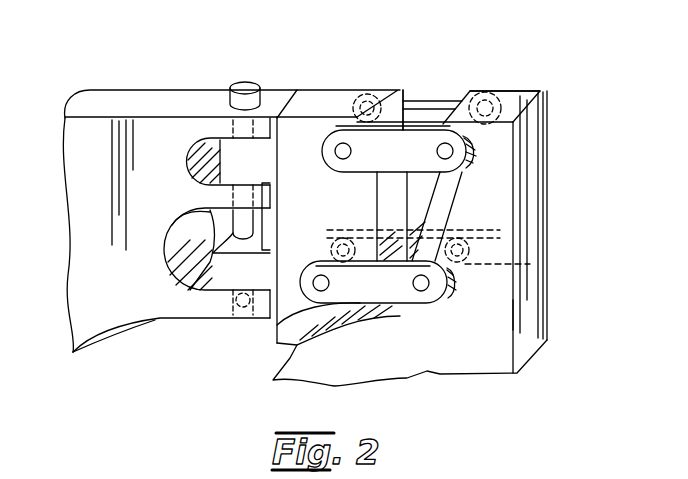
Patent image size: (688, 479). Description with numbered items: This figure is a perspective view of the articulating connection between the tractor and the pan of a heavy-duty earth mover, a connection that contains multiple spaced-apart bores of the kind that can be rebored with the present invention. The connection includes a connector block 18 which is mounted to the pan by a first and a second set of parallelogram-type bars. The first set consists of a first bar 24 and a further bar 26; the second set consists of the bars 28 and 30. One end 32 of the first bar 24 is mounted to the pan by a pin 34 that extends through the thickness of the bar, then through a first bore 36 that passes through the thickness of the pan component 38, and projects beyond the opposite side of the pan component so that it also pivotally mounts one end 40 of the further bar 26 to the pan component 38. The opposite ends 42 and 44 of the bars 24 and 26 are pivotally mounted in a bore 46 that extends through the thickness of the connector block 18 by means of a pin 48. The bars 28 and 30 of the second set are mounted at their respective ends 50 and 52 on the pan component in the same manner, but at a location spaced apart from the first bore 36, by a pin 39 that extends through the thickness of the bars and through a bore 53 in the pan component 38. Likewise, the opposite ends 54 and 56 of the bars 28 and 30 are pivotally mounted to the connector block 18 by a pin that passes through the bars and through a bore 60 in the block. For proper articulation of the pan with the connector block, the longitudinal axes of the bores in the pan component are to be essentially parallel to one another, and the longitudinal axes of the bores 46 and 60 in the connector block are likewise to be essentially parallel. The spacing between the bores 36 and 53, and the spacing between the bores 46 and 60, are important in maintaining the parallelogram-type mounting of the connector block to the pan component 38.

The connector block 18 is at (313, 97).
The first bar of the first set 24 is at (388, 170).
The further bar of the first set 26 is at (437, 100).
The bar of the second set 28 is at (405, 308).
The bar of the second set 30 is at (427, 227).
The end of the first bar 32 is at (434, 225).
The pin 34 is at (457, 158).
The first bore 36 is at (483, 87).
The pan component 38 is at (533, 188).
The pin 39 is at (433, 300).
The end of the further bar 40 is at (543, 90).
The opposite end of bar 24 42 is at (332, 163).
The opposite end of bar 26 44 is at (357, 103).
The bore 46 is at (403, 90).
The pin 48 is at (335, 152).
The end of bar 28 50 is at (450, 288).
The end of bar 30 52 is at (536, 270).
The bore 53 is at (535, 226).
The opposite end of bar 28 54 is at (273, 322).
The opposite end of bar 30 56 is at (333, 230).
The bore 60 is at (310, 258).